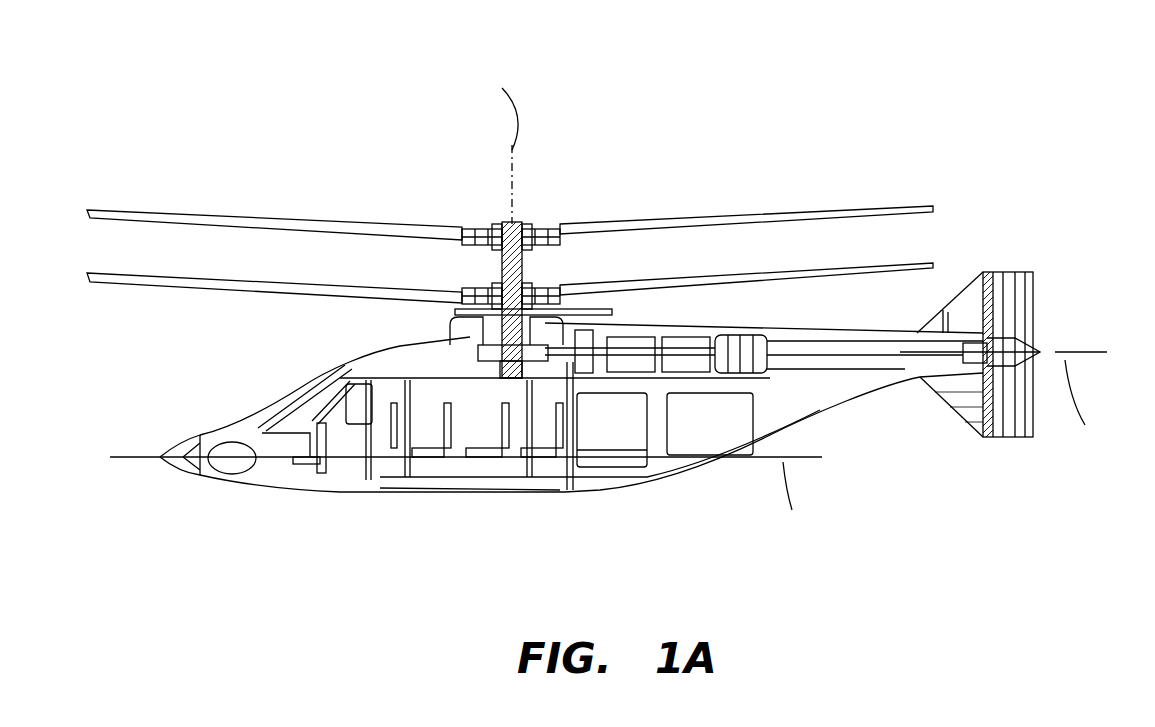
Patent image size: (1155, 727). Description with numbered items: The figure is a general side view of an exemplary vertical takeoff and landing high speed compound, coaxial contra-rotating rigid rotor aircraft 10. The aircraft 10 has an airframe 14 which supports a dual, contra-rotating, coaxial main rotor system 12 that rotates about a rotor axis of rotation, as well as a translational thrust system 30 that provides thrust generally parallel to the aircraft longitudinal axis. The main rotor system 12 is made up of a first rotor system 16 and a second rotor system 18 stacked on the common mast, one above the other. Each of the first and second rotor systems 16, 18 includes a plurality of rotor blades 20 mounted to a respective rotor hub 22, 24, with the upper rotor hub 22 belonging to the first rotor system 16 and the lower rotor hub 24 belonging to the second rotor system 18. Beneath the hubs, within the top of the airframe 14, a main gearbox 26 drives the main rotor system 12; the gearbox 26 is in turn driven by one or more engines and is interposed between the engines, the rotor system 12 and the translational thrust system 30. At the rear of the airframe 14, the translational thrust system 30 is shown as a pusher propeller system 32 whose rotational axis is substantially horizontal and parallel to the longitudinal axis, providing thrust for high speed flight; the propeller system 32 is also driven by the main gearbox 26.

The rotary wing aircraft 10 is at (749, 114).
The main rotor system 12 is at (562, 215).
The airframe 14 is at (347, 363).
The first rotor system 16 is at (488, 212).
The second rotor system 18 is at (551, 279).
The rotor blades 20 is at (665, 220).
The rotor hub 22 is at (535, 222).
The rotor hub 24 is at (482, 282).
The main gearbox 26 is at (455, 335).
The translational thrust system 30 is at (1050, 286).
The propeller system 32 is at (1003, 316).